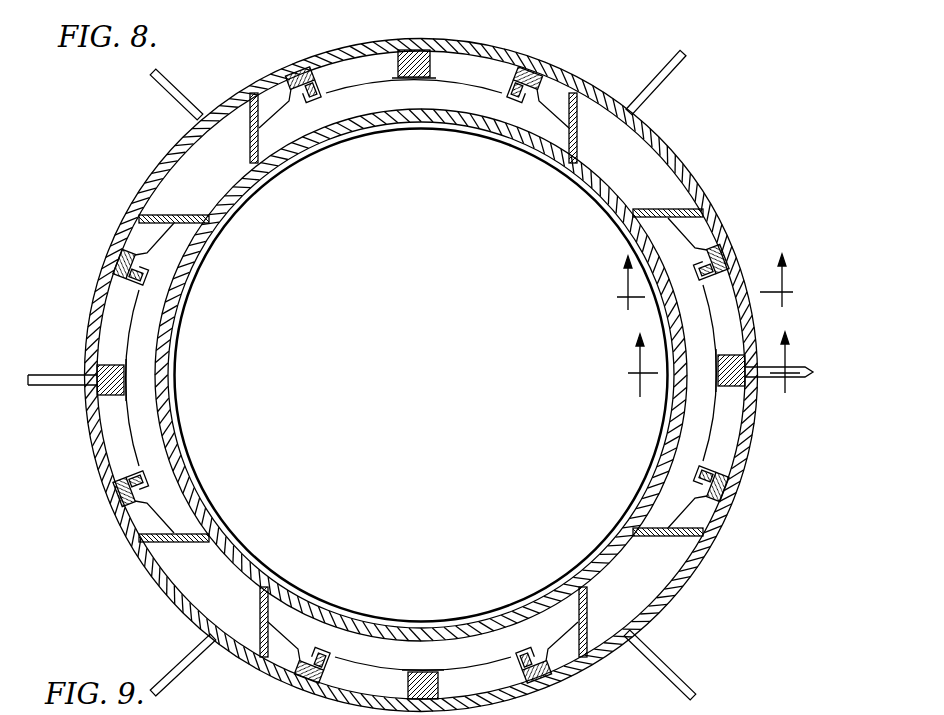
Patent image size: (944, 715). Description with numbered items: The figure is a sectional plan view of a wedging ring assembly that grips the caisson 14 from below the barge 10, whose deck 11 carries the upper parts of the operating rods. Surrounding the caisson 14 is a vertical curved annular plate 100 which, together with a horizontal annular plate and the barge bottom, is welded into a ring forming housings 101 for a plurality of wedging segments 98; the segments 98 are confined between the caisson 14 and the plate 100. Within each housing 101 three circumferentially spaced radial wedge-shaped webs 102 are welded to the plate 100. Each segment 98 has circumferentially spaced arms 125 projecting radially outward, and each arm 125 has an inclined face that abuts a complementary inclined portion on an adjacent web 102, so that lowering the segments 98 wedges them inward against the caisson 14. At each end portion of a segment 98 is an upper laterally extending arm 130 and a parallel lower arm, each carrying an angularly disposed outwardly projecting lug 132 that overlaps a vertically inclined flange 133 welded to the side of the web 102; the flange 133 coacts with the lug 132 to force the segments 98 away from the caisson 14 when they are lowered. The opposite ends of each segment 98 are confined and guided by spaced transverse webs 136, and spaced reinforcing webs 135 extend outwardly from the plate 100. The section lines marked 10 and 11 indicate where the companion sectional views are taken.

The caisson 14 is at (203, 258).
The wedging segment 98 is at (385, 92).
The vertical annular plate 100 is at (676, 152).
The housing 101 is at (476, 58).
The radial wedge-shaped web 102 is at (302, 70).
The arm 125 is at (533, 100).
The upper laterally extending arm 130 is at (720, 292).
The lug 132 is at (113, 270).
The vertically inclined flange 133 is at (134, 292).
The reinforcing web 135 is at (185, 101).
The transverse web 136 is at (261, 92).
The barge 10 is at (711, 364).
The deck 11 is at (702, 280).